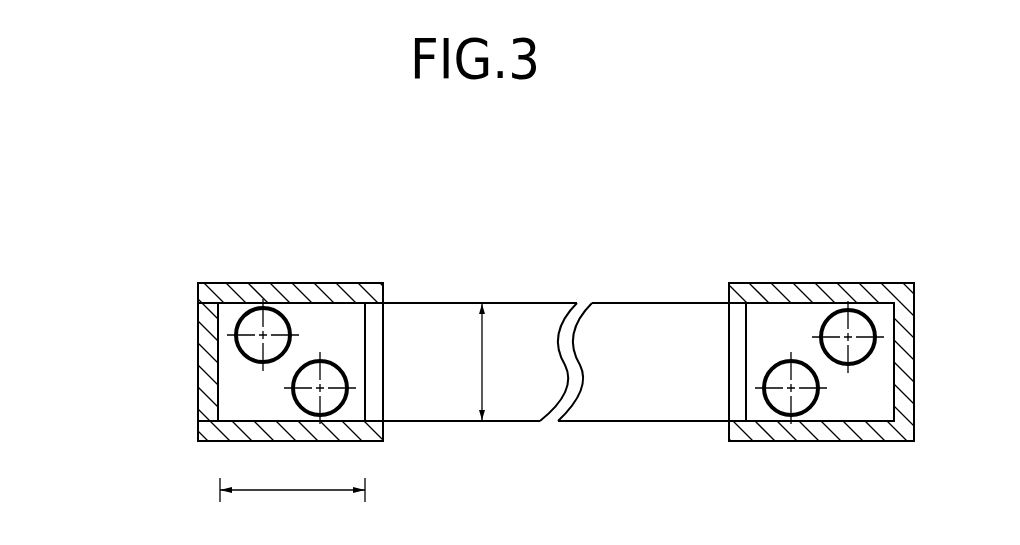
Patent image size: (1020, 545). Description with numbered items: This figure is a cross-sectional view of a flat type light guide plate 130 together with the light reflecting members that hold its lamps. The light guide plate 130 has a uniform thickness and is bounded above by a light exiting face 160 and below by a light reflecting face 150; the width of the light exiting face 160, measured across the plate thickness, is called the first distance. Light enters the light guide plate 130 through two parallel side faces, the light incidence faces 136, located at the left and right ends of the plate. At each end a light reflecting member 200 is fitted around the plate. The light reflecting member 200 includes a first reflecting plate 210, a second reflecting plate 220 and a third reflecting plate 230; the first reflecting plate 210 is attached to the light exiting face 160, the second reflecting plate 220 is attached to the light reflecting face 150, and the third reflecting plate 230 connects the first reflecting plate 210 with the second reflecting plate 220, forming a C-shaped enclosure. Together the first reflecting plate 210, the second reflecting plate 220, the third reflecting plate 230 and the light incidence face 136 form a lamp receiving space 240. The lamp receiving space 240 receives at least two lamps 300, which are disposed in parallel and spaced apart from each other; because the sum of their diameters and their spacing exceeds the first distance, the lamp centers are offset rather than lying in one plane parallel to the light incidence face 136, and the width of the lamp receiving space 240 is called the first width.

The flat type light guide plate 130 is at (555, 338).
The light incidence face 136 is at (366, 364).
The light reflecting face 150 is at (603, 422).
The light exiting face 160 is at (640, 303).
The light reflecting member 200 is at (204, 366).
The first reflecting plate 210 is at (252, 283).
The second reflecting plate 220 is at (252, 441).
The third reflecting plate 230 is at (208, 360).
The lamp receiving space 240 is at (334, 318).
The lamps 300 is at (347, 428).